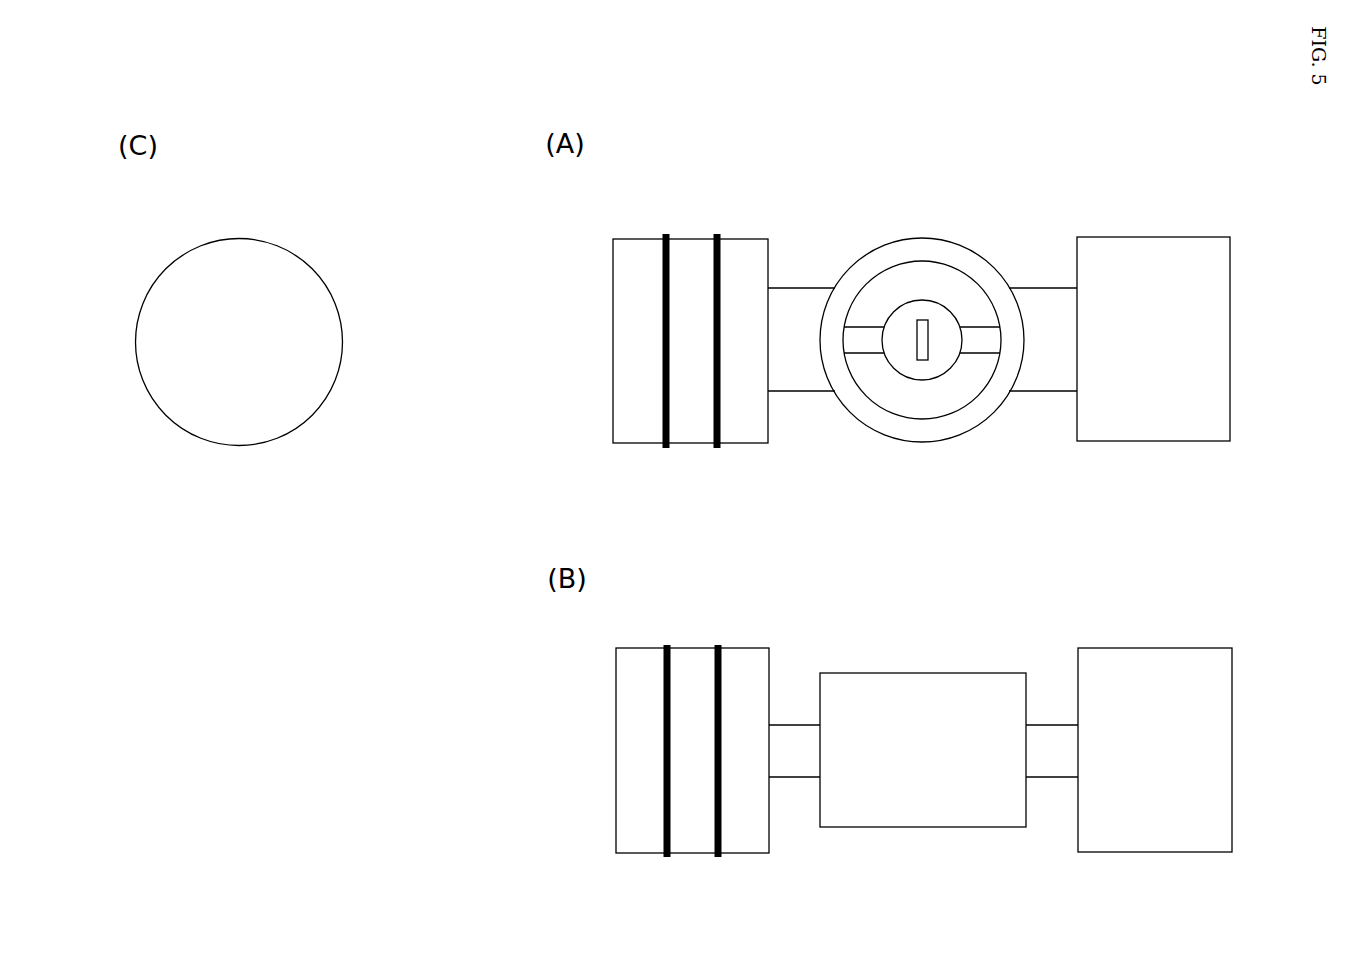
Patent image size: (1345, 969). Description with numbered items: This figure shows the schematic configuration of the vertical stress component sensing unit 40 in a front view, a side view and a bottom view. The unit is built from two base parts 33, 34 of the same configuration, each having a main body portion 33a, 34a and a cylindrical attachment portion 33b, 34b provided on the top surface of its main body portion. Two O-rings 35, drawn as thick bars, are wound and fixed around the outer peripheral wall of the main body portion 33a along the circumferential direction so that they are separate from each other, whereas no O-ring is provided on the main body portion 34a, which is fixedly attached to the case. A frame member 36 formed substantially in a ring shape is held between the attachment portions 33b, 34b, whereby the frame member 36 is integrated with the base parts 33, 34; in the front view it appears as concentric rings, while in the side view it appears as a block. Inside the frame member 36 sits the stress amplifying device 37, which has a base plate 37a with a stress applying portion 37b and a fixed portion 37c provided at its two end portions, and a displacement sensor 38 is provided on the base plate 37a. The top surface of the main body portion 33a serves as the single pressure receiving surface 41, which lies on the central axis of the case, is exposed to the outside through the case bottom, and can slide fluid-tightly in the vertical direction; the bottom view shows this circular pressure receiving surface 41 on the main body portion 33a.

The base part 33 is at (717, 182).
The main body portion 33a is at (742, 242).
The attachment portion 33b is at (793, 292).
The base part 34 is at (1120, 182).
The main body portion 34a is at (1100, 243).
The attachment portion 34b is at (1040, 292).
The O-rings 35 is at (717, 448).
The frame member 36 is at (892, 245).
The stress amplifying device 37 is at (793, 492).
The base plate 37a is at (922, 376).
The stress applying portion 37b is at (860, 347).
The fixed portion 37c is at (977, 346).
The displacement sensor 38 is at (923, 323).
The vertical stress component sensing unit 40 is at (1182, 183).
The pressure receiving surface 41 is at (606, 302).